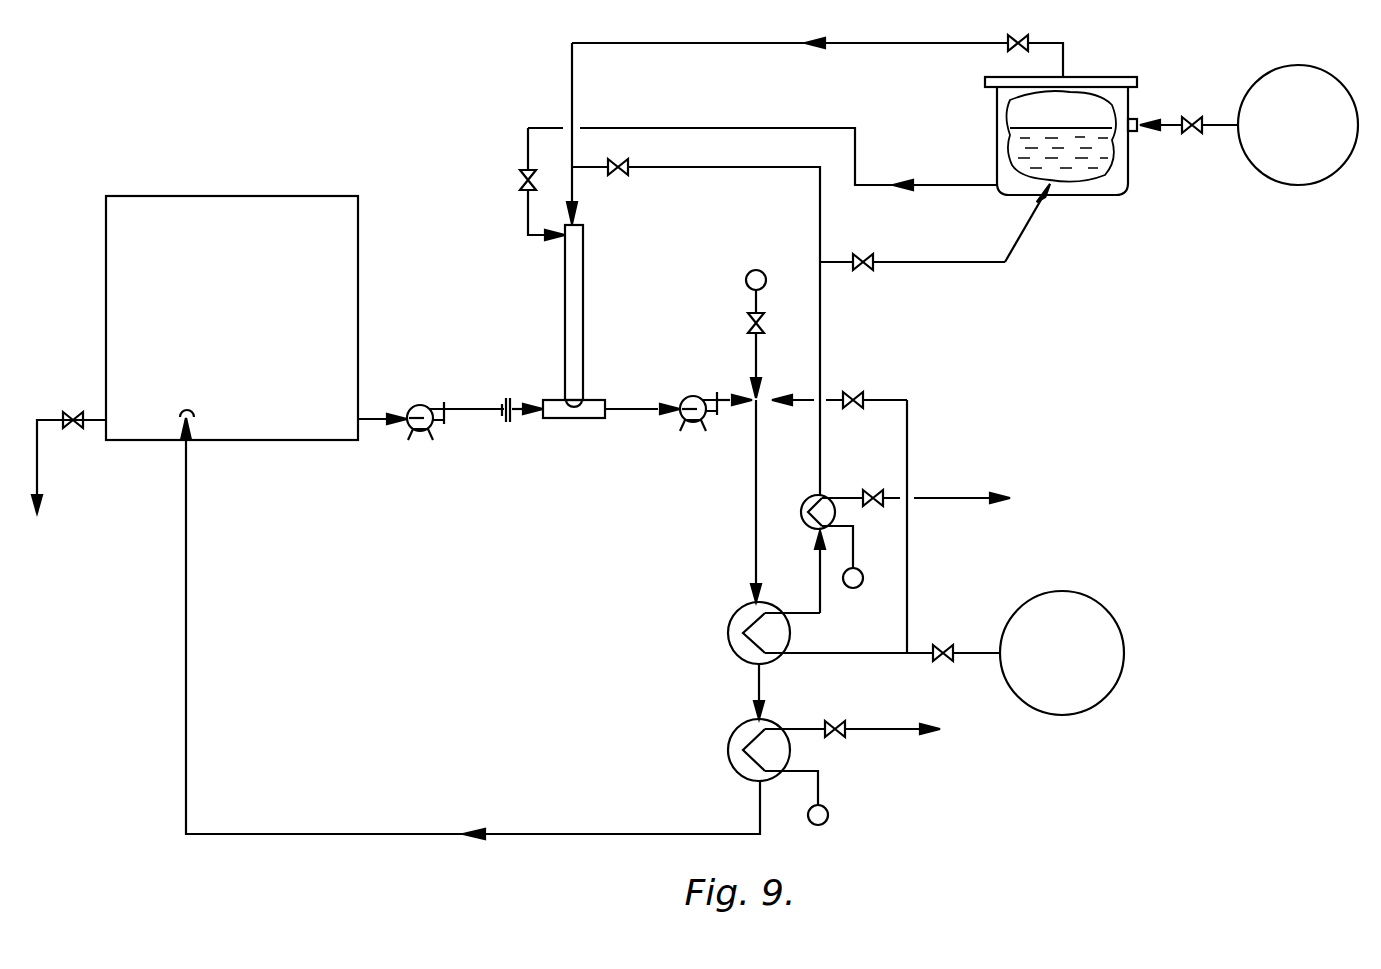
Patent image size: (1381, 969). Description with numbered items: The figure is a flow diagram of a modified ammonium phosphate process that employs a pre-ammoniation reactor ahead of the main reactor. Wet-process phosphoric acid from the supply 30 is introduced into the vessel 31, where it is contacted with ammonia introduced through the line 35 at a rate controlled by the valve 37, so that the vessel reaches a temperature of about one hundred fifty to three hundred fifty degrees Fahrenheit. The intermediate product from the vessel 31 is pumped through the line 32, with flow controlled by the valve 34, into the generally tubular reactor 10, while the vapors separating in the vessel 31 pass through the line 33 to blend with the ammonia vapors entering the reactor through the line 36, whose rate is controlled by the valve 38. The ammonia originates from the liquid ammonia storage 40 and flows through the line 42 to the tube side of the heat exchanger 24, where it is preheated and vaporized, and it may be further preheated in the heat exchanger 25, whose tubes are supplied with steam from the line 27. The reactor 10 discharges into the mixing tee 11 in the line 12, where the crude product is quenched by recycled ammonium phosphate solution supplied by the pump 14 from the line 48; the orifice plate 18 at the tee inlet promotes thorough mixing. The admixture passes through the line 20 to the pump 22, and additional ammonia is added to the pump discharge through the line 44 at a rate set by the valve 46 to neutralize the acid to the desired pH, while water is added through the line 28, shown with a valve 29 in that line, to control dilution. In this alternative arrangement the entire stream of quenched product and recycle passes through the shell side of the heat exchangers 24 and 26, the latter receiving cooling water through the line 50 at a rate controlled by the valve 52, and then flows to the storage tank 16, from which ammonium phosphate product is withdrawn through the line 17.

The reactor 10 is at (577, 318).
The mixing tee 11 is at (586, 406).
The line 12 is at (466, 408).
The pump 14 is at (412, 406).
The storage tank 16 is at (346, 352).
The line 17 is at (40, 462).
The orifice plate 18 is at (507, 428).
The line 20 is at (637, 412).
The pump 22 is at (692, 398).
The heat exchanger 24 is at (745, 611).
The heat exchanger 25 is at (806, 501).
The heat exchanger 26 is at (745, 734).
The line 27 is at (856, 566).
The line 28 is at (750, 291).
The valve 29 is at (766, 329).
The supply 30 is at (1262, 88).
The vessel 31 is at (1110, 186).
The line 32 is at (728, 128).
The line 33 is at (856, 43).
The valve 34 is at (519, 181).
The line 35 is at (985, 262).
The line 36 is at (822, 218).
The valve 37 is at (866, 256).
The valve 38 is at (618, 178).
The liquid ammonia storage 40 is at (1095, 620).
The line 42 is at (828, 653).
The line 44 is at (908, 445).
The valve 46 is at (857, 392).
The line 48 is at (565, 832).
The line 50 is at (820, 792).
The valve 52 is at (838, 717).